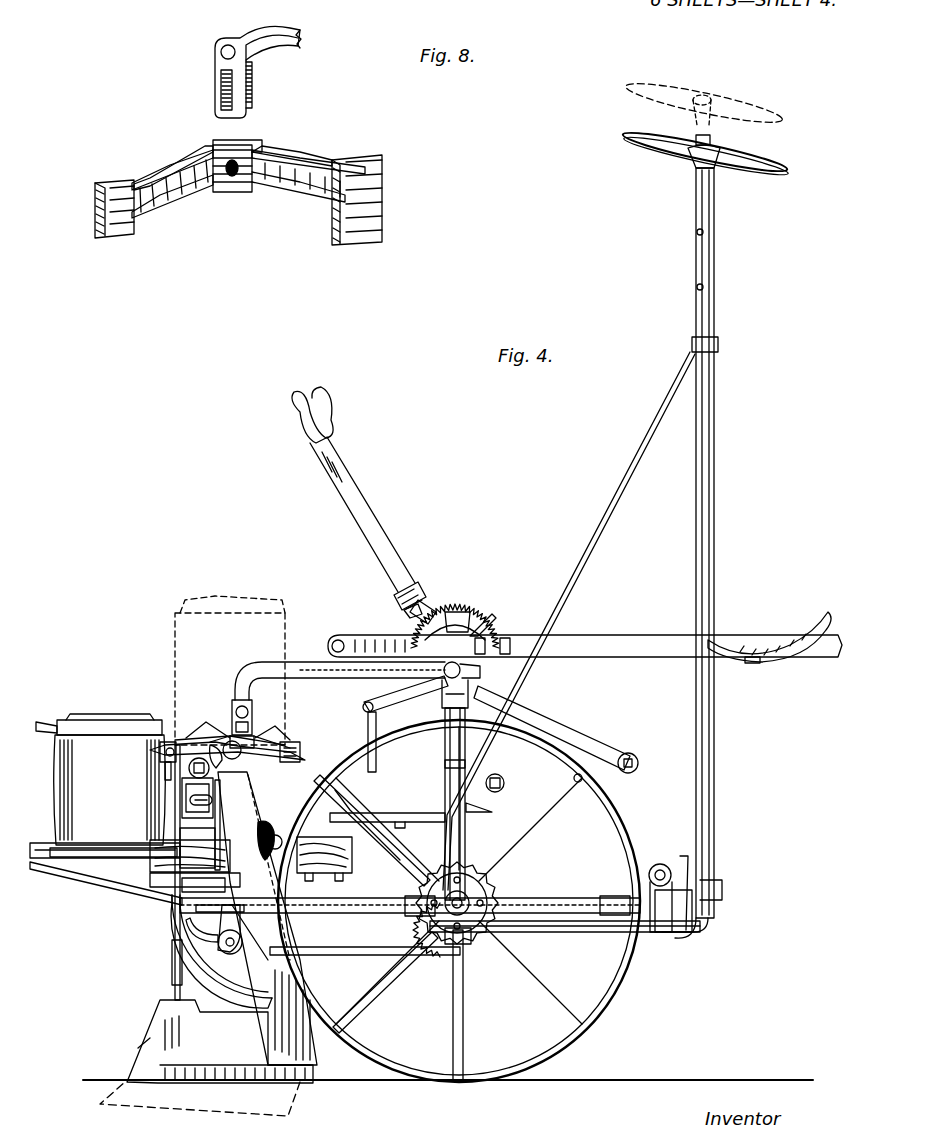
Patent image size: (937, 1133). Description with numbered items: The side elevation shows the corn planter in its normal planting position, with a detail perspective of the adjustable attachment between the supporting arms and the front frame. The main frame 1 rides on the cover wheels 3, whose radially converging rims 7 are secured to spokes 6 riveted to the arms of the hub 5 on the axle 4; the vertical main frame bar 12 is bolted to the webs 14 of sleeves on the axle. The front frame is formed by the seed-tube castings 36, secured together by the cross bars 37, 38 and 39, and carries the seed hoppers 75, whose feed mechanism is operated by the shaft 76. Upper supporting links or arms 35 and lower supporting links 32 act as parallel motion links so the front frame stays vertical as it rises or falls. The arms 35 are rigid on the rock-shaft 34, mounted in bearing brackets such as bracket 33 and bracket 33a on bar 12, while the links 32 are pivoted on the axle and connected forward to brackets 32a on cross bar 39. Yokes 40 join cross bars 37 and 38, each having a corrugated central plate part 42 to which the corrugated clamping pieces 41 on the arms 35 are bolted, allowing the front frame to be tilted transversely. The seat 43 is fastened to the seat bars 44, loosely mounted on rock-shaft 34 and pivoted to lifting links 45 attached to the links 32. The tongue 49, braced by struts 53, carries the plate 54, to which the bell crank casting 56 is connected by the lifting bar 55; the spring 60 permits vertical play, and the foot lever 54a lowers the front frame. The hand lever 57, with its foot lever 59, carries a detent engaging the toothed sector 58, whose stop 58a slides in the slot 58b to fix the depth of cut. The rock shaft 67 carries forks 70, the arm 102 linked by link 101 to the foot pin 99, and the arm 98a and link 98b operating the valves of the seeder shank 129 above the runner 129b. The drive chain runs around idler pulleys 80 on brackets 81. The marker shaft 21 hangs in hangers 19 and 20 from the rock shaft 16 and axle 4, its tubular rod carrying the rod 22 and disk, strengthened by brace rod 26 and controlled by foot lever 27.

In FIG. 8, the upper supporting links or arms 35 is at (275, 46).
In FIG. 4, the upper supporting links or arms 35 is at (300, 662).
In FIG. 8, the clamping pieces 41 is at (253, 92).
In FIG. 4, the clamping pieces 41 is at (236, 700).
In FIG. 8, the central plate part 42 is at (240, 185).
In FIG. 8, the cross bar 38 is at (113, 188).
In FIG. 4, the cross bar 38 is at (160, 752).
In FIG. 8, the cross bar 37 is at (380, 163).
In FIG. 4, the cross bar 37 is at (446, 778).
In FIG. 8, the yokes 40 is at (192, 155).
In FIG. 4, the bearing bracket 33 is at (716, 475).
In FIG. 4, the rod 22 is at (716, 310).
In FIG. 4, the brace rod 26 is at (627, 512).
In FIG. 4, the seat bars 44 is at (648, 634).
In FIG. 4, the seat 43 is at (812, 612).
In FIG. 4, the toothed sector 58 is at (500, 602).
In FIG. 4, the stop 58a is at (436, 608).
In FIG. 4, the slot 58b is at (462, 610).
In FIG. 4, the rock-shaft 34 is at (492, 636).
In FIG. 4, the hand lever 57 is at (340, 458).
In FIG. 4, the shaft 76 is at (252, 735).
In FIG. 4, the bearing bracket 33a is at (468, 690).
In FIG. 4, the foot lever 59 is at (615, 742).
In FIG. 4, the lifting link or bar 55 is at (405, 699).
In FIG. 4, the bell crank casting 56 is at (382, 700).
In FIG. 4, the main frame 1 is at (459, 901).
In FIG. 4, the supporting or cover wheels 3 is at (565, 827).
In FIG. 4, the rims 7 is at (580, 980).
In FIG. 4, the webs 14 is at (495, 884).
In FIG. 4, the hub 5 is at (500, 900).
In FIG. 4, the marker shaft 21 is at (582, 934).
In FIG. 4, the lower supporting links 32 is at (365, 936).
In FIG. 4, the axle 4 is at (435, 935).
In FIG. 4, the hanger 20 is at (465, 950).
In FIG. 4, the spokes 6 is at (378, 1006).
In FIG. 4, the rock shaft 16 is at (660, 862).
In FIG. 4, the hanger 19 is at (668, 932).
In FIG. 4, the foot lever 27 is at (718, 892).
In FIG. 4, the fork 70 is at (200, 736).
In FIG. 4, the seed hoppers 75 is at (106, 785).
In FIG. 4, the tongue 49 is at (40, 866).
In FIG. 4, the struts 53 is at (135, 880).
In FIG. 4, the cross bar 39 is at (178, 915).
In FIG. 4, the arm 102 is at (190, 788).
In FIG. 4, the arm 98a is at (185, 740).
In FIG. 4, the link 98b is at (267, 918).
In FIG. 4, the rock shaft 67 is at (168, 742).
In FIG. 4, the link 101 is at (296, 800).
In FIG. 4, the idler pulleys 80 is at (221, 951).
In FIG. 4, the brackets 81 is at (217, 929).
In FIG. 4, the brackets 32a is at (205, 940).
In FIG. 4, the seed-tube castings 36 is at (178, 972).
In FIG. 4, the seeder shank 129 is at (220, 1041).
In FIG. 4, the runner or furrow opener 129b is at (140, 1050).
In FIG. 4, the lifting links 45 is at (324, 848).
In FIG. 4, the plate 54 is at (410, 820).
In FIG. 4, the foot lever 54a is at (495, 800).
In FIG. 4, the spring 60 is at (452, 772).
In FIG. 4, the vertical main frame bar 12 is at (470, 760).
In FIG. 4, the pin 99 is at (505, 783).